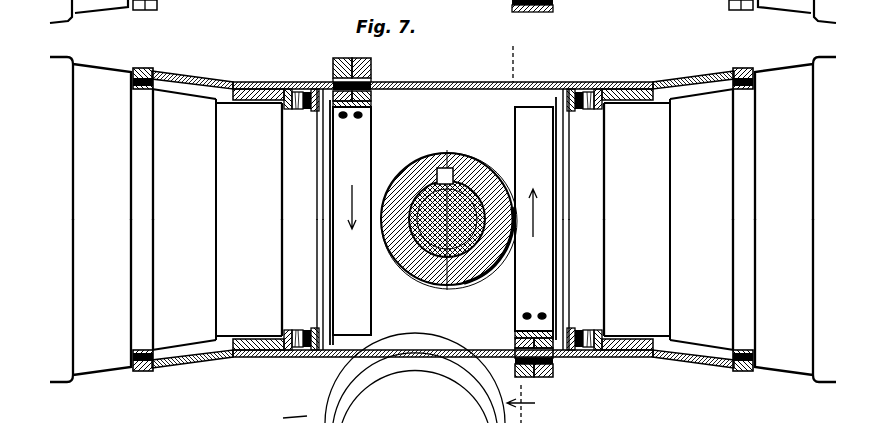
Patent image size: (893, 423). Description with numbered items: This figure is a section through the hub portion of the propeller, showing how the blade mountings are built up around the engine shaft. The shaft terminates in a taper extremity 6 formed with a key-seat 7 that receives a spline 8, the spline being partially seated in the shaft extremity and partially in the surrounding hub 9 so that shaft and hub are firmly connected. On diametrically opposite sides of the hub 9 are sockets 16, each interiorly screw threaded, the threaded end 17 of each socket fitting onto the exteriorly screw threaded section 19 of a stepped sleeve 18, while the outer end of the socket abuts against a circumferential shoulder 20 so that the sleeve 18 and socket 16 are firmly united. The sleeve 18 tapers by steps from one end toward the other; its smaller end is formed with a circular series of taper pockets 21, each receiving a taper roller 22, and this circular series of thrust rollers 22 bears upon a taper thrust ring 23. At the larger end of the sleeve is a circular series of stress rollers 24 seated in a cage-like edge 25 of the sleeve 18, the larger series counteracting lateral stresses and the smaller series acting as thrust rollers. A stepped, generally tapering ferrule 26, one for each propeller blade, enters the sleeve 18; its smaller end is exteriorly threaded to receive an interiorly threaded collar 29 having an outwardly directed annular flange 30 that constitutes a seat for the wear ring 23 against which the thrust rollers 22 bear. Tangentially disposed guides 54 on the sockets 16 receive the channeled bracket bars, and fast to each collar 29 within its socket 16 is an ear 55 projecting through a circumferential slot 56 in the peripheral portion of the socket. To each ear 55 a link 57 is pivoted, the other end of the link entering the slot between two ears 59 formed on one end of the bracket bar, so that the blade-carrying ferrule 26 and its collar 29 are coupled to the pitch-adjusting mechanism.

The taper extremity 6 is at (444, 285).
The key-seat 7 is at (457, 165).
The spline 8 is at (442, 167).
The hub 9 is at (415, 172).
The socket 16 is at (445, 82).
The threaded end of socket 17 is at (256, 97).
The stepped sleeve 18 is at (201, 77).
The exteriorly screw threaded section 19 is at (263, 102).
The circumferential shoulder 20 is at (240, 82).
The taper pockets 21 is at (280, 115).
The taper roller 22 is at (298, 92).
The taper thrust ring 23 is at (315, 111).
The stress rollers 24 is at (144, 88).
The cage-like edge 25 is at (151, 70).
The ferrule 26 is at (443, 219).
The collar 29 is at (368, 295).
The annular flange 30 is at (333, 257).
The guides 54 is at (306, 422).
The ear 55 is at (371, 104).
The circumferential slot 56 is at (372, 83).
The link 57 is at (351, 63).
The ears 59 is at (512, 5).